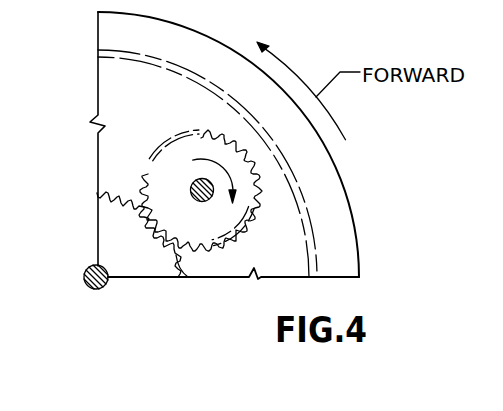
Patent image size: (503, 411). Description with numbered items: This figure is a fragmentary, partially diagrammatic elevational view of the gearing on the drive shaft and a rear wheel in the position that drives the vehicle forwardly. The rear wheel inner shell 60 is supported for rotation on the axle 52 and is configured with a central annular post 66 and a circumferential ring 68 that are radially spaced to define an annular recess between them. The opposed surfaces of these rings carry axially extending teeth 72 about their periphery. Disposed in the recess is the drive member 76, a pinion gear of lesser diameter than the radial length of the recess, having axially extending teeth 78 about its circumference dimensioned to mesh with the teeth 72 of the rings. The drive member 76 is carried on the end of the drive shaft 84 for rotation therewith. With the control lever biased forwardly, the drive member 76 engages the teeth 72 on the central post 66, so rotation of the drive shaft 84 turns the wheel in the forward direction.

The axle 52 is at (88, 287).
The inner shell 60 is at (345, 225).
The central annular post 66 is at (137, 270).
The circumferential ring 68 is at (342, 275).
The teeth 72 is at (191, 278).
The drive member 76 is at (162, 164).
The teeth 78 is at (148, 175).
The drive shaft 84 is at (205, 201).